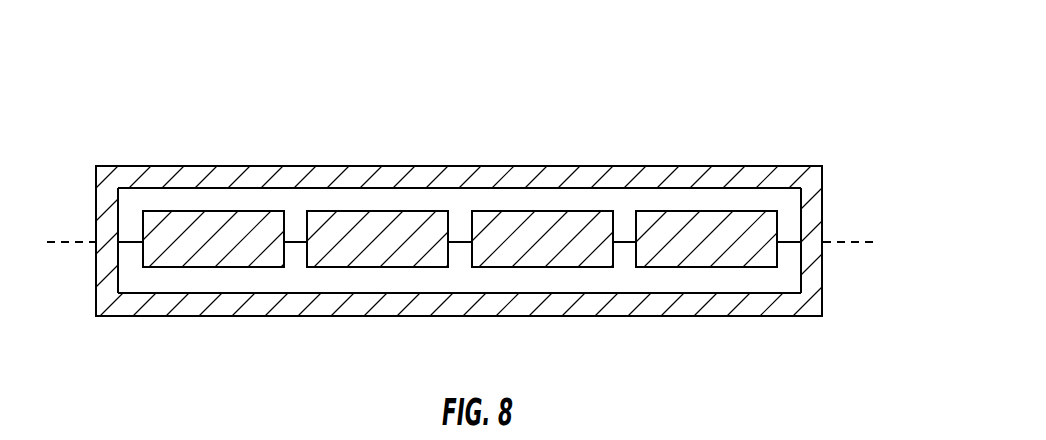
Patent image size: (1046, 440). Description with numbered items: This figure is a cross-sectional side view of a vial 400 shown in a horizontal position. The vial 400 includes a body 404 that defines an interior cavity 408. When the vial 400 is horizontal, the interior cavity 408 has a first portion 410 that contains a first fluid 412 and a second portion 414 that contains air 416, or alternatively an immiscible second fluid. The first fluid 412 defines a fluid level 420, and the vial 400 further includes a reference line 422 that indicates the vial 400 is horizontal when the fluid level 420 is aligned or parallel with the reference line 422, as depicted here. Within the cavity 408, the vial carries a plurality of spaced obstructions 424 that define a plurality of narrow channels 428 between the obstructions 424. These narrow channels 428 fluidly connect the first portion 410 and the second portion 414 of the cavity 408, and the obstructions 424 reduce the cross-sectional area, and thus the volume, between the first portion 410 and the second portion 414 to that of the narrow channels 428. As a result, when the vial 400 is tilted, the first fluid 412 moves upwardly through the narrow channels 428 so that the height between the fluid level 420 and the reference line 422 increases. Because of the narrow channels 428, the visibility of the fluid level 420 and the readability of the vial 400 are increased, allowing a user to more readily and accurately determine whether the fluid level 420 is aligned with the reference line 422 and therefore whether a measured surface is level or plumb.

The vial 400 is at (135, 88).
The body 404 is at (778, 166).
The interior cavity 408 is at (729, 190).
The first portion 410 is at (545, 278).
The first fluid 412 is at (615, 278).
The second portion 414 is at (526, 197).
The air 416 is at (611, 197).
The fluid level 420 is at (795, 245).
The reference line 422 is at (838, 242).
The spaced obstructions 424 is at (487, 210).
The narrow channels 428 is at (458, 249).